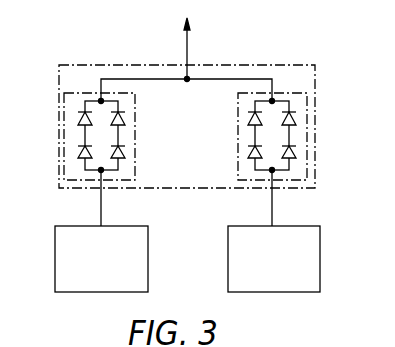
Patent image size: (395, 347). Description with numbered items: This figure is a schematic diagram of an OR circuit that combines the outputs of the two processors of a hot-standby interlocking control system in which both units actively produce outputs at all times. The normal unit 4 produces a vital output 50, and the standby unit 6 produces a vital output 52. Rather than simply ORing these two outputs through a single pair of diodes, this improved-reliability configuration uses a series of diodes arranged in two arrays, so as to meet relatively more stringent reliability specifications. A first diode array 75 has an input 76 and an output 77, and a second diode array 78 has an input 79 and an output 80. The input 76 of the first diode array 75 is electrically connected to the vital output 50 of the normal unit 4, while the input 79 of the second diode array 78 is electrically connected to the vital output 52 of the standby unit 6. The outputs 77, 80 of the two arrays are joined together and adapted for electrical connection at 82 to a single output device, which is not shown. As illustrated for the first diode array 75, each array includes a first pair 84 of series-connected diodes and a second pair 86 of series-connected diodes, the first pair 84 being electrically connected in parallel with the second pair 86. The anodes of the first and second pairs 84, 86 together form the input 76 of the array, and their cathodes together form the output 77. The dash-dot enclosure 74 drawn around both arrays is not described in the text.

The normal processor unit 4 is at (55, 245).
The standby processor unit 6 is at (322, 243).
The vital output 50 is at (100, 226).
The vital output 52 is at (276, 226).
The diode OR combining circuit 74 is at (57, 97).
The first diode array 75 is at (137, 113).
The input 76 is at (103, 173).
The output 77 is at (100, 100).
The second diode array 78 is at (238, 152).
The input 79 is at (270, 173).
The output 80 is at (273, 100).
The electrical connection 82 is at (189, 41).
The first pair of series-connected diodes 84 is at (70, 140).
The second pair of series-connected diodes 86 is at (134, 140).